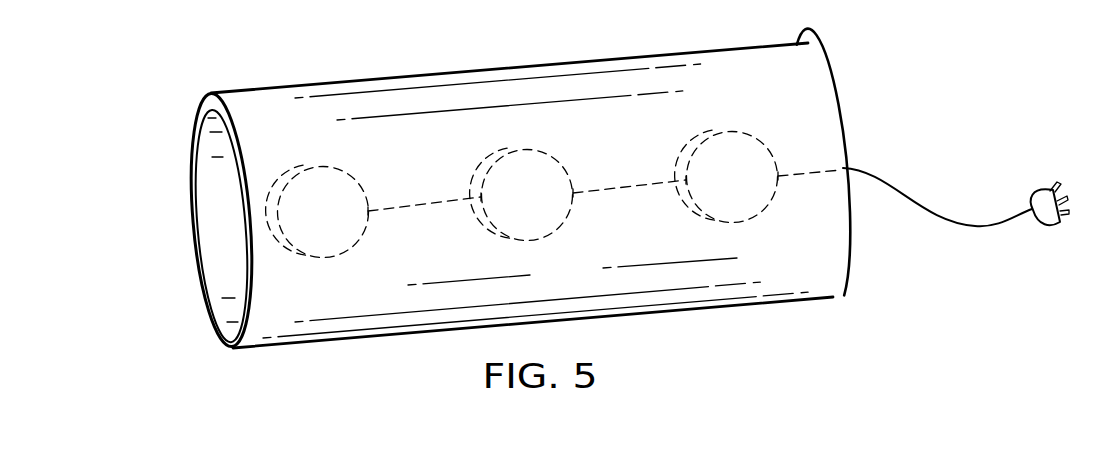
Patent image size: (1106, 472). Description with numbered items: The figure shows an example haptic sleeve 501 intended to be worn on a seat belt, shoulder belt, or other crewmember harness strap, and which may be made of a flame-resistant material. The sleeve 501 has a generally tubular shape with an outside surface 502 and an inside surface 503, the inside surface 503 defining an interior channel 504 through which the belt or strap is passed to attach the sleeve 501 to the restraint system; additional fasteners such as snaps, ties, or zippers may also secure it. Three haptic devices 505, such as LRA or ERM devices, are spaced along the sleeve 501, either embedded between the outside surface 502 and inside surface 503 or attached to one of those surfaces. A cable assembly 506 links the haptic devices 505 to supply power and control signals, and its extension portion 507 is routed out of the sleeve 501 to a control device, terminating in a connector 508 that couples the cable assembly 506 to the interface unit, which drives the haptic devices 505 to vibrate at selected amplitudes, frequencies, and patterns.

The haptic sleeve 501 is at (610, 57).
The outside surface 502 is at (268, 100).
The inside surface 503 is at (207, 188).
The interior channel 504 is at (216, 247).
The haptic devices 505 is at (342, 257).
The cable assembly 506 is at (427, 202).
The extension portion 507 is at (957, 220).
The connector 508 is at (1048, 227).